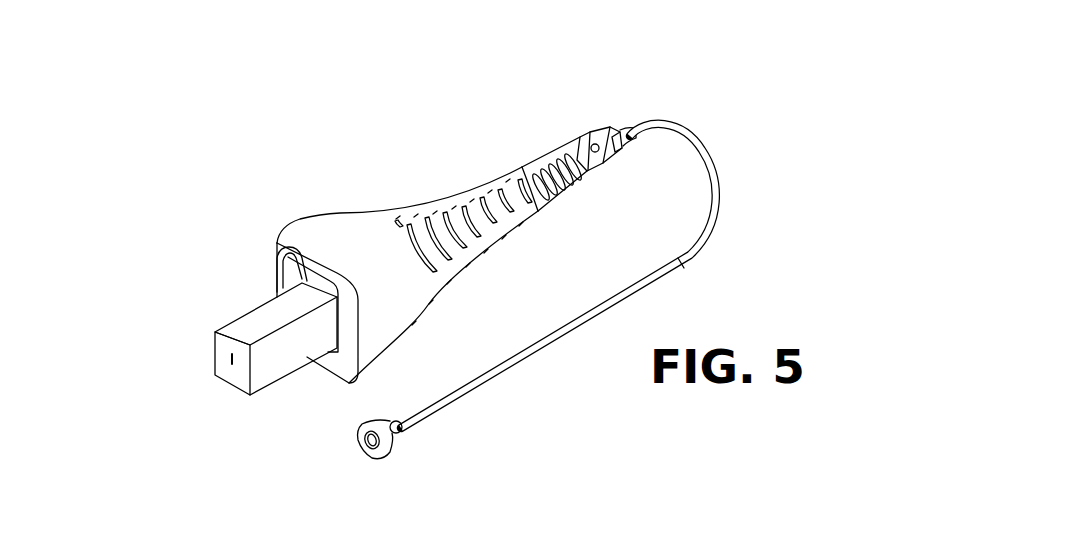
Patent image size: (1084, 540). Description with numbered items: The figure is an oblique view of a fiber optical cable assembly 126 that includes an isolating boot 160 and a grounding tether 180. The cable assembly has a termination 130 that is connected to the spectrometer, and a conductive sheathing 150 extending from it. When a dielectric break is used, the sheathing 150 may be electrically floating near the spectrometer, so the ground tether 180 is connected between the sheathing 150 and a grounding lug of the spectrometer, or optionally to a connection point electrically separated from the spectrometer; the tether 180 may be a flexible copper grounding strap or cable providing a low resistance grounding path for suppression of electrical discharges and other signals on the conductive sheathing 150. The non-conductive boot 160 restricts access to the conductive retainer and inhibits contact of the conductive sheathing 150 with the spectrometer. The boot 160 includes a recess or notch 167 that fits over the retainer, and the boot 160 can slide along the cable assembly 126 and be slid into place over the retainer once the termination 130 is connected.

The fiber optical cable assembly 126 is at (150, 84).
The termination 130 is at (255, 313).
The sheathing 150 is at (563, 168).
The isolating boot 160 is at (320, 218).
The notch 167 is at (284, 257).
The grounding tether 180 is at (712, 228).